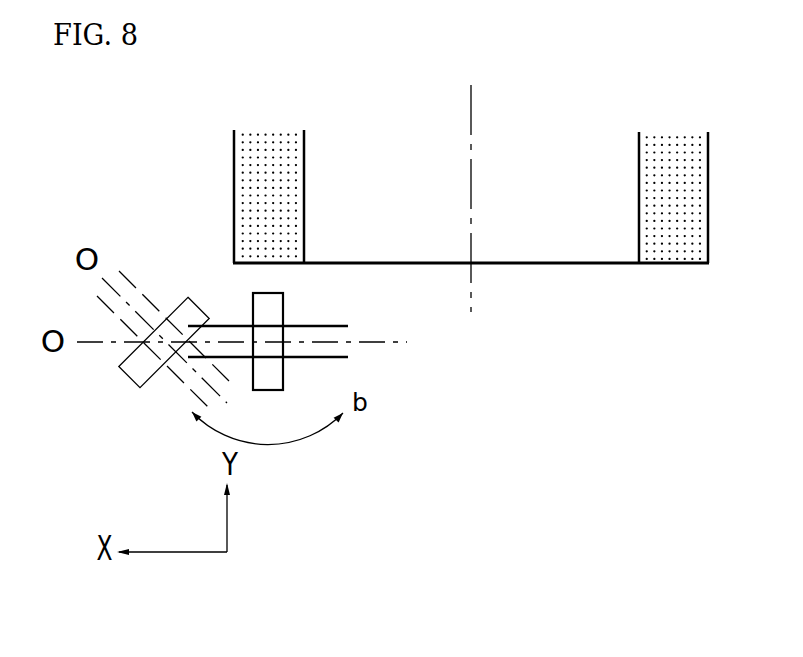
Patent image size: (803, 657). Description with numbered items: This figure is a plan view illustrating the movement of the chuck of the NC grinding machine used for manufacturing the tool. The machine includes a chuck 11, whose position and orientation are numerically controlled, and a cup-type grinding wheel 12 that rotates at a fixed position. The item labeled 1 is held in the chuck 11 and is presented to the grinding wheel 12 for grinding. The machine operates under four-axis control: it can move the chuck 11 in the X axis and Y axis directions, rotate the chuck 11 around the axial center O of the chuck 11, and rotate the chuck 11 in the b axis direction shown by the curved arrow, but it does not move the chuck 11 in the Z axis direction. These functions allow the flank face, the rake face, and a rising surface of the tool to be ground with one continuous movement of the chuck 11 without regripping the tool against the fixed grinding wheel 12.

The laser processing head 1 is at (286, 300).
The chuck 11 is at (349, 323).
The grinding wheel 12 is at (665, 249).